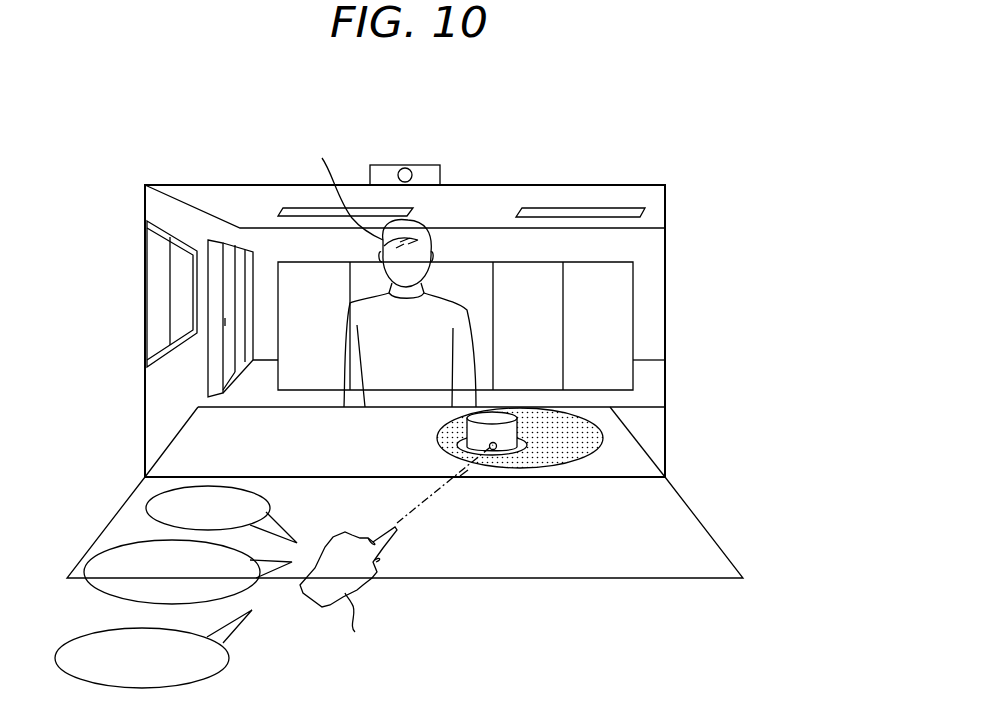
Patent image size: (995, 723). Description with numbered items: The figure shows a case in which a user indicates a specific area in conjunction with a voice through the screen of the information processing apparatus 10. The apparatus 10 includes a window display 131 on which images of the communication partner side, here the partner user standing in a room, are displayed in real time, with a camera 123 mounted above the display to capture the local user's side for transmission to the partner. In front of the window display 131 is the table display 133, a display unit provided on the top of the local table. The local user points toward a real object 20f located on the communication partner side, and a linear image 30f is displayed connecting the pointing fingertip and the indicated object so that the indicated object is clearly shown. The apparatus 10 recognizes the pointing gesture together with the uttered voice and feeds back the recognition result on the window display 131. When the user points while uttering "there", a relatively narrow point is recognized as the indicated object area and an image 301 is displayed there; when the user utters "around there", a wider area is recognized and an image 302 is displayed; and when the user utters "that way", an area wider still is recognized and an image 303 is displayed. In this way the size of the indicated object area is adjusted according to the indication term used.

The information processing apparatus 10 is at (616, 148).
The window display 131 is at (668, 213).
The table display 133 is at (713, 538).
The camera 123 is at (418, 165).
The real object 20f is at (515, 408).
The linear image 30f is at (467, 472).
The image 301 is at (540, 458).
The image 302 is at (540, 435).
The image 303 is at (577, 413).